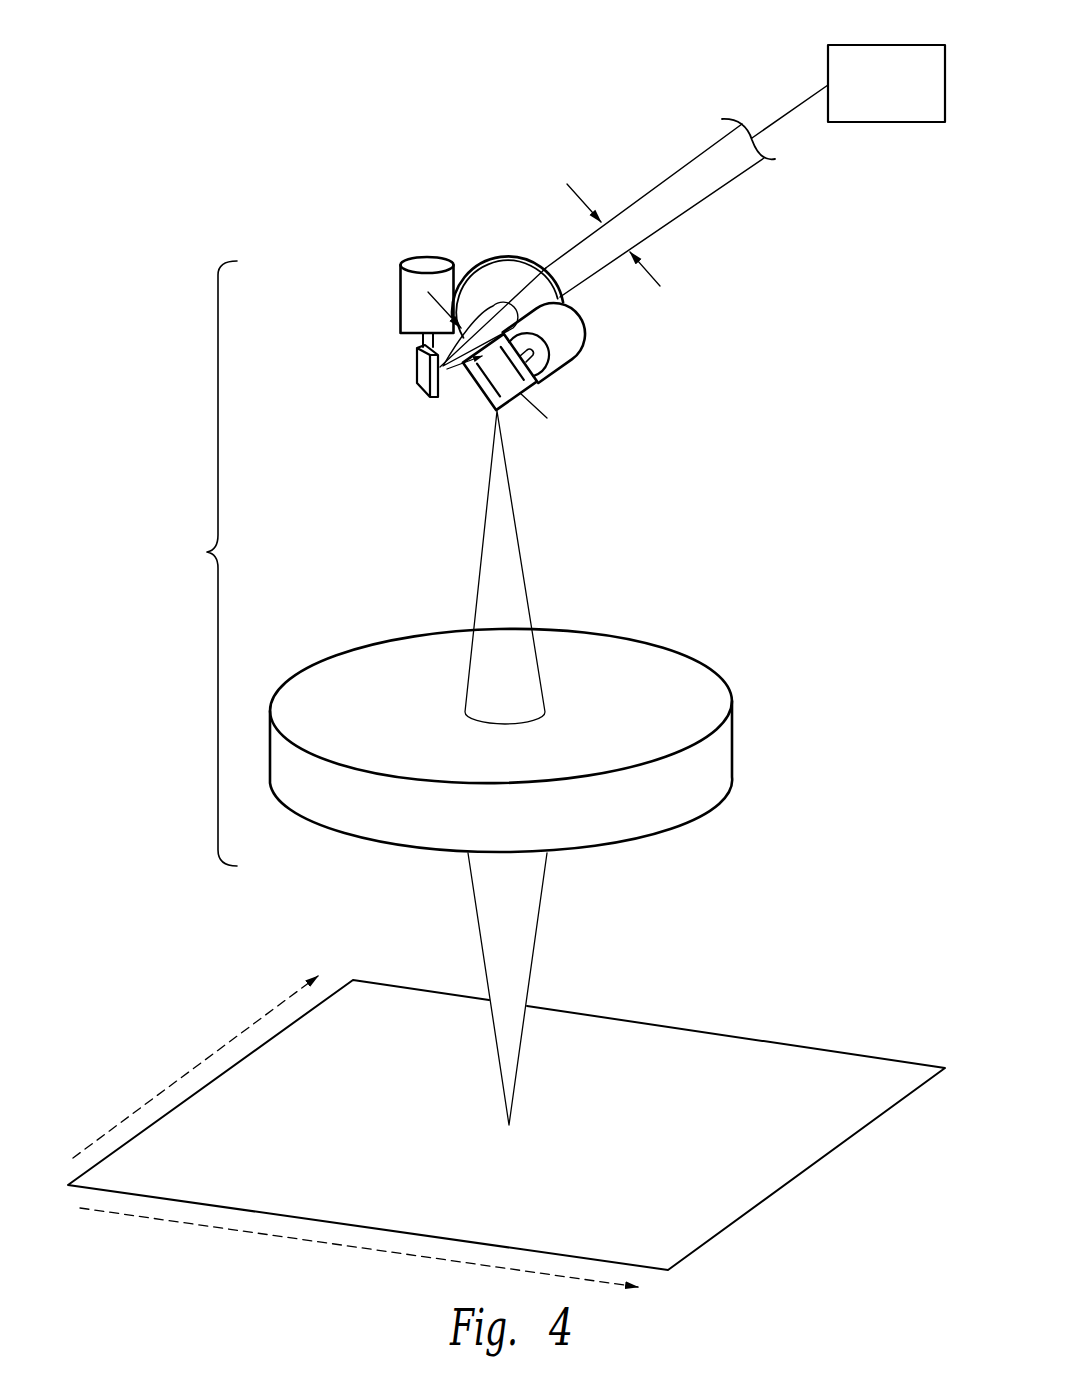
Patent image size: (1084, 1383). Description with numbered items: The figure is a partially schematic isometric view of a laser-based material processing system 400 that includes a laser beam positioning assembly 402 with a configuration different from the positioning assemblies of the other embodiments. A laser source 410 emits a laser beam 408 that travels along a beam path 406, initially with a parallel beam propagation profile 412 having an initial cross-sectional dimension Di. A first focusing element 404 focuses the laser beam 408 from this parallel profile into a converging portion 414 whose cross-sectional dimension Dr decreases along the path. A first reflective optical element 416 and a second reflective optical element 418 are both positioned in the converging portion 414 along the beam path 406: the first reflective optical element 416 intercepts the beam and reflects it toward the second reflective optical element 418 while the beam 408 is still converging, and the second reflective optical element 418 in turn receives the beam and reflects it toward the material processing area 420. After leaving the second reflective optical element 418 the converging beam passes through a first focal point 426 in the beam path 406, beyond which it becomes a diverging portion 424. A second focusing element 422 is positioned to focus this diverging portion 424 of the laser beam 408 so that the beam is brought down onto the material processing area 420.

The laser-based material processing system 400 is at (242, 105).
The laser beam positioning assembly 402 is at (207, 552).
The first focusing element 404 is at (500, 277).
The beam path 406 is at (750, 185).
The laser beam 408 is at (712, 157).
The laser source 410 is at (865, 45).
The parallel beam propagation profile 412 is at (657, 202).
The converging portion 414 is at (478, 262).
The first reflective optical element 416 is at (425, 371).
The second reflective optical element 418 is at (530, 380).
The material processing area 420 is at (817, 1065).
The second focusing element 422 is at (722, 752).
The diverging portion 424 is at (512, 578).
The first focal point 426 is at (494, 414).